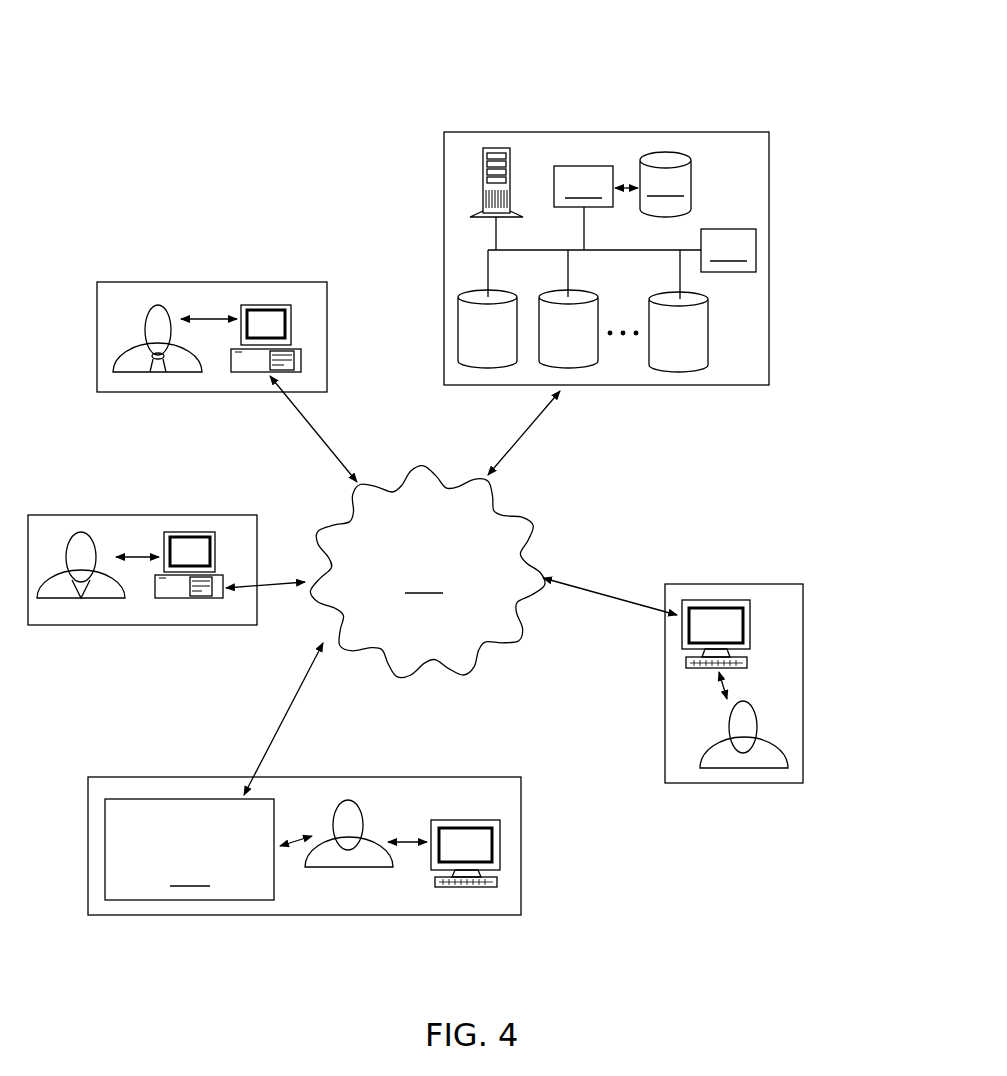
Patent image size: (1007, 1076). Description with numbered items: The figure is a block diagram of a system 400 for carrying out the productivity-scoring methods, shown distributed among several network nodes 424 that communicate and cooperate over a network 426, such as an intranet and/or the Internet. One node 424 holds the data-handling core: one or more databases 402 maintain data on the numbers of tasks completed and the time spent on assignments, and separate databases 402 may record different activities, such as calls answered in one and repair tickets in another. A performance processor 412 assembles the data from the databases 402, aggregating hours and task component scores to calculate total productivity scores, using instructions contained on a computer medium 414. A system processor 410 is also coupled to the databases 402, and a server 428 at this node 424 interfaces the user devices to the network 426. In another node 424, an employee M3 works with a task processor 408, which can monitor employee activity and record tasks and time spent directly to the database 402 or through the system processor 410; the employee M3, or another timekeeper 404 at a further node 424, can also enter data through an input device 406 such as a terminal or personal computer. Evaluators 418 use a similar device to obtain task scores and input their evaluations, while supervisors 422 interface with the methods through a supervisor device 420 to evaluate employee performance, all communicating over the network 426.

The system 400 is at (104, 55).
The database 402 is at (566, 368).
The timekeeper 404 is at (758, 770).
The input device 406 is at (183, 532).
The task processor 408 is at (189, 849).
The system processor 410 is at (622, 250).
The performance processor 412 is at (583, 208).
The computer medium 414 is at (665, 184).
The evaluator 418 is at (95, 598).
The supervisor device 420 is at (258, 305).
The supervisor 422 is at (172, 373).
The network node 424 is at (650, 132).
The network 426 is at (427, 572).
The server 428 is at (496, 147).
The employee M3 is at (332, 868).